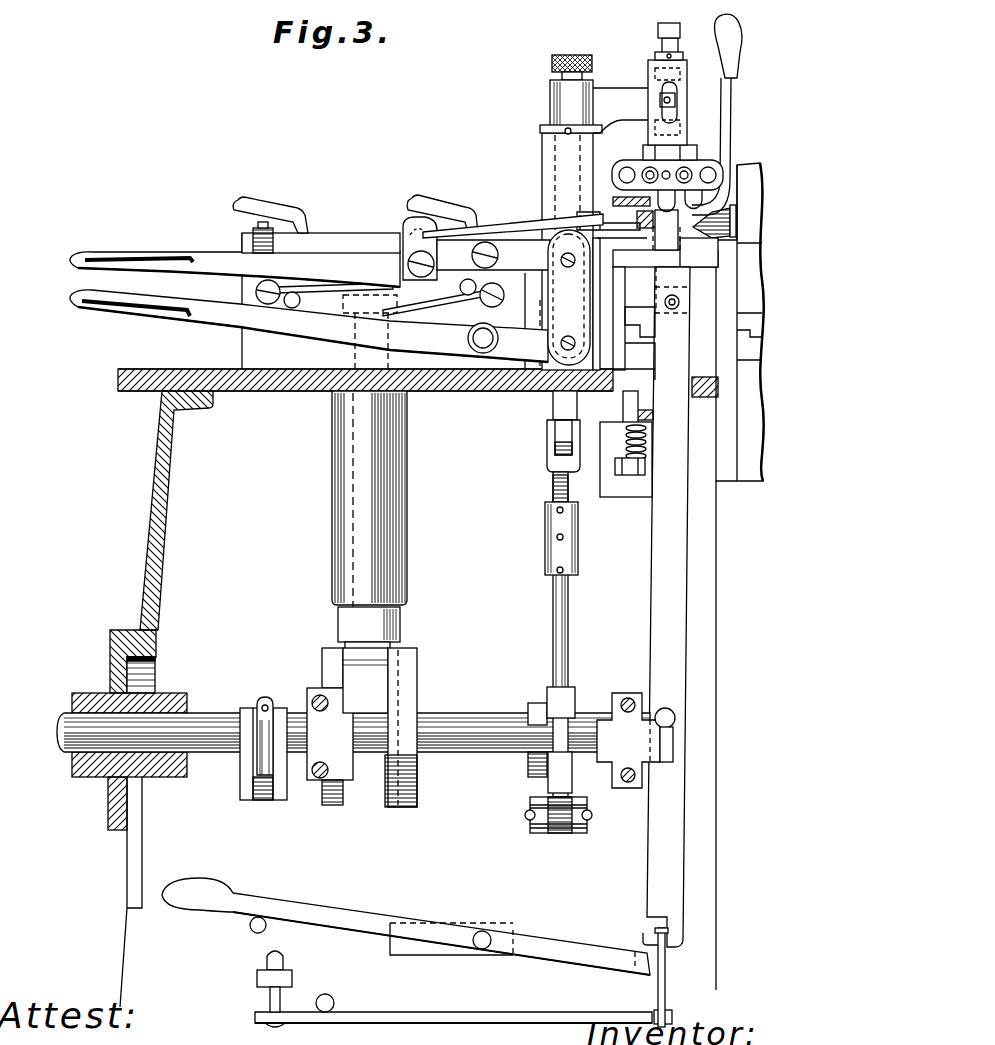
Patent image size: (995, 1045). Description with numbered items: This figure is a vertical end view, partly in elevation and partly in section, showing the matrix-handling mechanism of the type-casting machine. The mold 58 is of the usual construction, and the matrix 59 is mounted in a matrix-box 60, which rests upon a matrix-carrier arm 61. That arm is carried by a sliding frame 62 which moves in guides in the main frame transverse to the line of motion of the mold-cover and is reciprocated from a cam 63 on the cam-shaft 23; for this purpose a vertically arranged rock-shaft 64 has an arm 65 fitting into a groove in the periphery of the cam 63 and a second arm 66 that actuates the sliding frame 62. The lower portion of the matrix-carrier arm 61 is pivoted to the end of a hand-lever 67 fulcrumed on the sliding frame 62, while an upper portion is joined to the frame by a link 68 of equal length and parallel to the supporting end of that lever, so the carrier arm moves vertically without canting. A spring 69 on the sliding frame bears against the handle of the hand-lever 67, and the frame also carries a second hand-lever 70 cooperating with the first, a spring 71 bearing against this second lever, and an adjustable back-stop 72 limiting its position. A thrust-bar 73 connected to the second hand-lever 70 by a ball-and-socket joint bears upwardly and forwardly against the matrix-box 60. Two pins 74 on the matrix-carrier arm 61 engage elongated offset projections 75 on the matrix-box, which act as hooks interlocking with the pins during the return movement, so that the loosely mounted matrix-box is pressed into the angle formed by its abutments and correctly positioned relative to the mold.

The cam-shaft 23 is at (430, 716).
The mold 58 is at (727, 576).
The matrix 59 is at (640, 200).
The matrix-box 60 is at (600, 210).
The matrix-carrier arm 61 is at (623, 237).
The sliding frame 62 is at (326, 240).
The cam 63 is at (362, 727).
The rock-shaft 64 is at (405, 609).
The arm 65 is at (372, 634).
The second arm 66 is at (370, 286).
The hand-lever 67 is at (309, 326).
The link 68 is at (493, 255).
The spring 69 is at (443, 300).
The second hand-lever 70 is at (235, 269).
The spring 71 is at (324, 296).
The adjustable back-stop 72 is at (253, 248).
The thrust-bar 73 is at (513, 217).
The pins 74 is at (620, 213).
The elongated offset projections 75 is at (620, 218).